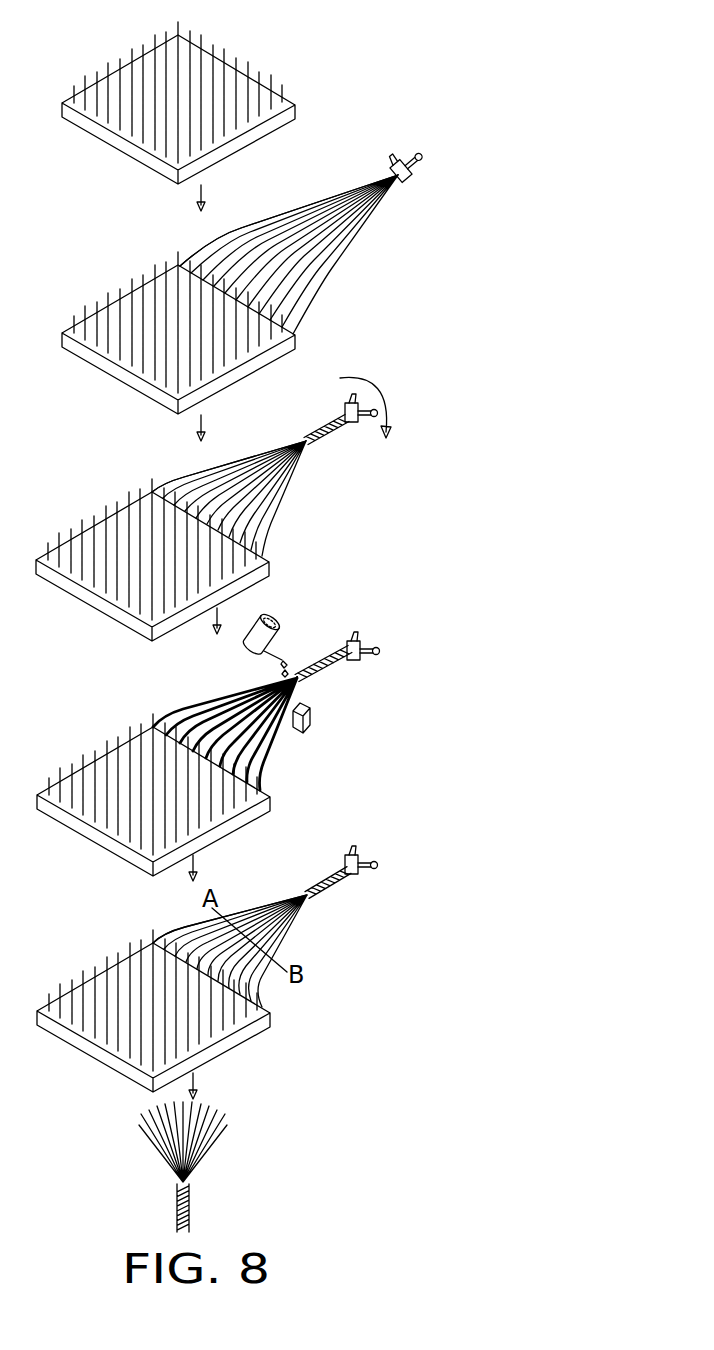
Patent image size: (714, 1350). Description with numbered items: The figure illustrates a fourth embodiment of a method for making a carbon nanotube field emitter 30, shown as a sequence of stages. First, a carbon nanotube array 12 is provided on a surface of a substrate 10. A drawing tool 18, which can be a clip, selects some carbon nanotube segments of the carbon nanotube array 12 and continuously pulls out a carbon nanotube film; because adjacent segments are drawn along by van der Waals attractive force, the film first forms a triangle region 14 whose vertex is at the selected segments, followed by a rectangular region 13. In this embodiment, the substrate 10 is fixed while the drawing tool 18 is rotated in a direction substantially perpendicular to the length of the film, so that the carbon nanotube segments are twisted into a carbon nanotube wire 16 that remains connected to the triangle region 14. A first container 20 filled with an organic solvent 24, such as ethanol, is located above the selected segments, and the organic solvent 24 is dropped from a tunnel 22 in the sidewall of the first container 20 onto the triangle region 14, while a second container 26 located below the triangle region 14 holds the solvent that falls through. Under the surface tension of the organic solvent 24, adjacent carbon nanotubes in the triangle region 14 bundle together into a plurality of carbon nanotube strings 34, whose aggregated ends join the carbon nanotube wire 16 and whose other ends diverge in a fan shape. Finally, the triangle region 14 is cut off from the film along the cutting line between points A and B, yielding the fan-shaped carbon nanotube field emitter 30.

The substrate 10 is at (115, 142).
The carbon nanotube array 12 is at (120, 62).
The rectangular region 13 is at (197, 247).
The triangle region 14 is at (345, 265).
The carbon nanotube wire 16 is at (316, 436).
The drawing tool 18 is at (415, 172).
The first container 20 is at (275, 614).
The tunnel 22 is at (255, 648).
The organic solvent 24 is at (282, 673).
The second container 26 is at (306, 718).
The carbon nanotube field emitter 30 is at (190, 1183).
The carbon nanotube strings 34 is at (283, 735).